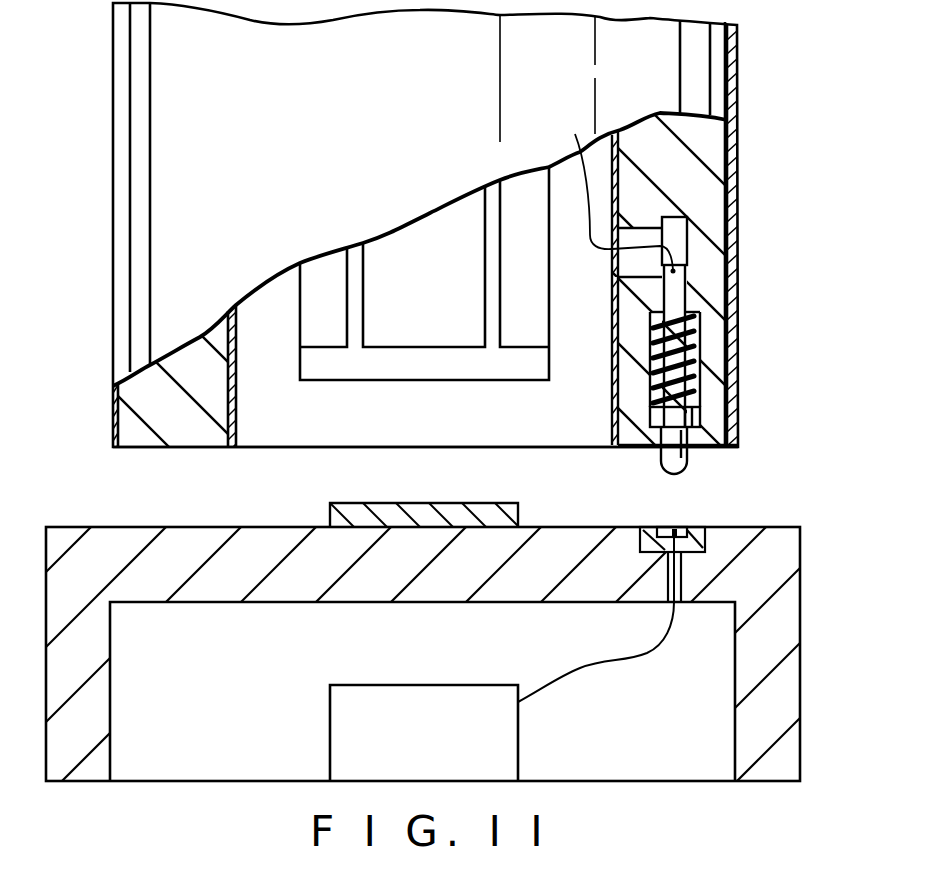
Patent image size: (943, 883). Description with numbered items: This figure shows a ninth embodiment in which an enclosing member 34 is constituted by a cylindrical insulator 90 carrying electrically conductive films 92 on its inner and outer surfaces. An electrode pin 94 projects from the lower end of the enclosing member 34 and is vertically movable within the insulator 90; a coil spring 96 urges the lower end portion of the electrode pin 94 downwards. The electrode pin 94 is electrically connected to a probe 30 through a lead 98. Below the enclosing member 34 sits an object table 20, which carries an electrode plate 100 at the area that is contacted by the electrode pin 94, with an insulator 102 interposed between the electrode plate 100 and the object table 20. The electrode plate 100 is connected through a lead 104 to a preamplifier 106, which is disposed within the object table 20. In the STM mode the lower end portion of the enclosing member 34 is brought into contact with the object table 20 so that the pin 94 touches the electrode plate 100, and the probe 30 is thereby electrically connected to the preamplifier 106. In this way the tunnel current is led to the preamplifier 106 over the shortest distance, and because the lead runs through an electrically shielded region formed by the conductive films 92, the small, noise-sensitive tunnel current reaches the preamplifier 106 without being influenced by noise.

The object table 20 is at (800, 568).
The probe 30 is at (423, 427).
The enclosing member 34 is at (748, 67).
The cylindrical insulator 90 is at (720, 146).
The electrically conductive films 92 is at (740, 200).
The electrode pin 94 is at (688, 466).
The coil spring 96 is at (695, 353).
The lead 98 is at (587, 243).
The electrode plate 100 is at (665, 526).
The insulator 102 is at (697, 526).
The lead 104 is at (558, 688).
The preamplifier 106 is at (404, 685).